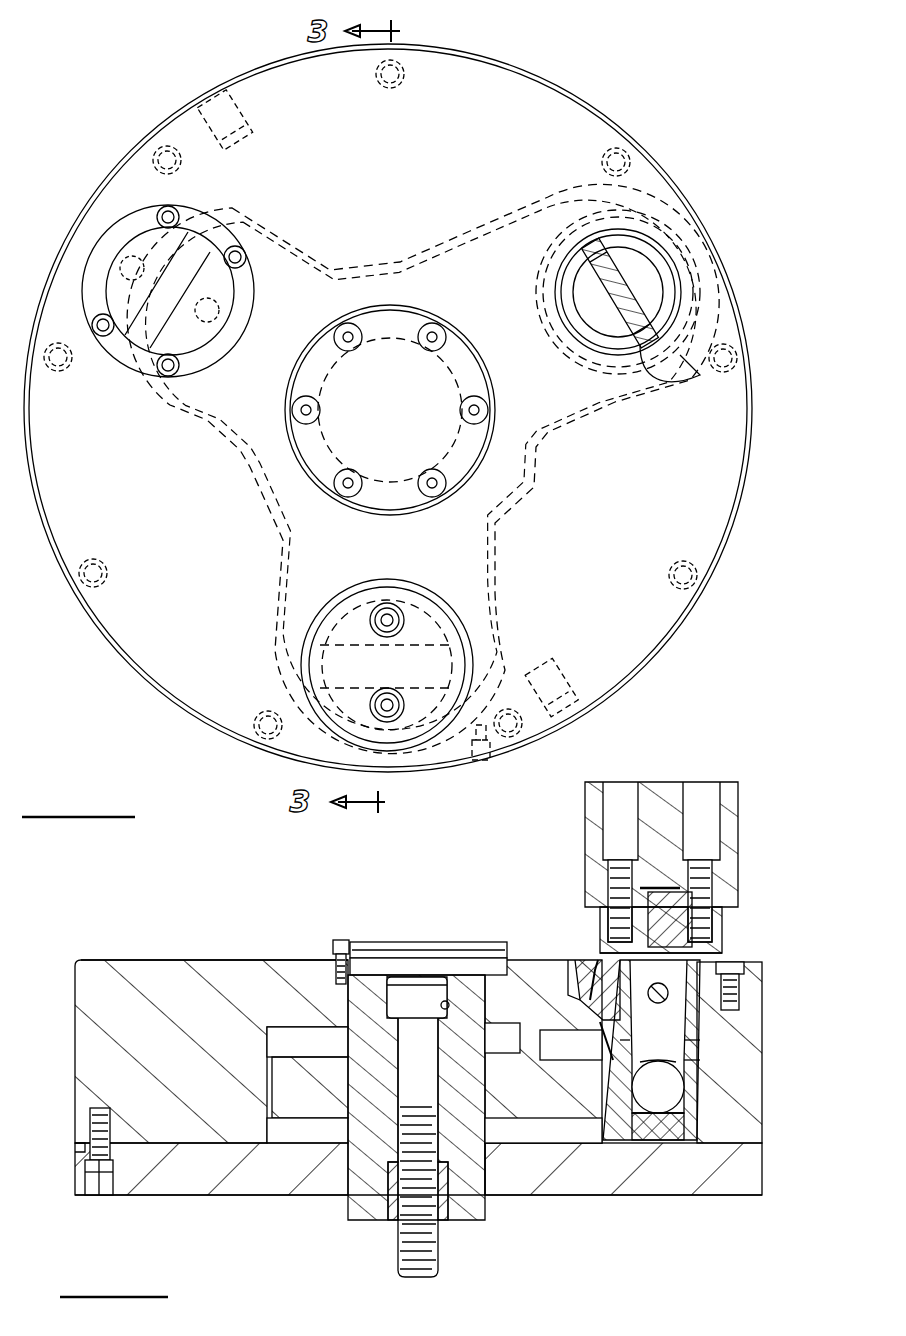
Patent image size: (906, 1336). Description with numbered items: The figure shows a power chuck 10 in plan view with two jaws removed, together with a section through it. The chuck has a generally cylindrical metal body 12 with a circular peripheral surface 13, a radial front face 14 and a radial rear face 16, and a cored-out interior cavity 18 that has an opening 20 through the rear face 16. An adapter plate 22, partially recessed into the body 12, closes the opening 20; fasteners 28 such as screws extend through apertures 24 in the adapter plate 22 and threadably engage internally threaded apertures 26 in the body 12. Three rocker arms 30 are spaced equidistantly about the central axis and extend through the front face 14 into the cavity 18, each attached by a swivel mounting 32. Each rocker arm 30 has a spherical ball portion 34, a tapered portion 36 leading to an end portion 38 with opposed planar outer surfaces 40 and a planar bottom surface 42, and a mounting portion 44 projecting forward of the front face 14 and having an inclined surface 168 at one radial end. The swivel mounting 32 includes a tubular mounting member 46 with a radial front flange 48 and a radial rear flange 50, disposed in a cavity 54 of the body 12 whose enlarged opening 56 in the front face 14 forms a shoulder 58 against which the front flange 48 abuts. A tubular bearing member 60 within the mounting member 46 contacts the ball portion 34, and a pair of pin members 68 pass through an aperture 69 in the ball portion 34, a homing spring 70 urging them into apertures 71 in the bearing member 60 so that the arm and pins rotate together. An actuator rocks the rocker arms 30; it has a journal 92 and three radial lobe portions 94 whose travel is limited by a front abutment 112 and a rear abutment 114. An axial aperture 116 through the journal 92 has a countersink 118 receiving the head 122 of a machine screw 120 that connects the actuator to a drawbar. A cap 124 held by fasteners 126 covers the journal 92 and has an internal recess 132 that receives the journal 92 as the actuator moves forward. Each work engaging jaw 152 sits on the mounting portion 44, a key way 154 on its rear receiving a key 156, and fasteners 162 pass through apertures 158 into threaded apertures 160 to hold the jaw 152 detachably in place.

In FIG. 2, the power chuck 10 is at (662, 140).
In FIG. 3, the power chuck 10 is at (88, 945).
In FIG. 2, the body 12 is at (732, 548).
In FIG. 3, the body 12 is at (95, 1040).
In FIG. 3, the circular peripheral surface 13 is at (73, 1100).
In FIG. 2, the radial front face 14 is at (612, 647).
In FIG. 3, the radial front face 14 is at (160, 958).
In FIG. 3, the radial rear face 16 is at (178, 1150).
In FIG. 3, the cavity 18 is at (262, 1033).
In FIG. 3, the opening 20 is at (305, 1128).
In FIG. 3, the adapter plate 22 is at (708, 1188).
In FIG. 3, the apertures 24 is at (90, 1158).
In FIG. 3, the internally threaded apertures 26 is at (90, 1138).
In FIG. 2, the fasteners 28 is at (692, 583).
In FIG. 3, the fasteners 28 is at (100, 1175).
In FIG. 3, the rocker arms 30 is at (750, 942).
In FIG. 3, the swivel mounting 32 is at (596, 968).
In FIG. 3, the ball portion 34 is at (688, 1000).
In FIG. 3, the tapered portion 36 is at (690, 1060).
In FIG. 3, the end portion 38 is at (688, 1097).
In FIG. 3, the planar outer surfaces 40 is at (665, 1100).
In FIG. 3, the planar bottom surface 42 is at (650, 1105).
In FIG. 3, the mounting portion 44 is at (705, 892).
In FIG. 3, the tubular mounting member 46 is at (680, 1045).
In FIG. 3, the radial front flange 48 is at (572, 985).
In FIG. 3, the radial rear flange 50 is at (608, 1040).
In FIG. 3, the cavity 54 is at (680, 1040).
In FIG. 3, the enlarged opening 56 is at (745, 968).
In FIG. 3, the shoulder 58 is at (745, 995).
In FIG. 2, the tubular bearing member 60 is at (655, 275).
In FIG. 3, the tubular bearing member 60 is at (588, 1018).
In FIG. 2, the pin members 68 is at (682, 375).
In FIG. 3, the pin members 68 is at (592, 900).
In FIG. 2, the aperture 69 is at (630, 302).
In FIG. 3, the aperture 69 is at (668, 985).
In FIG. 2, the homing spring 70 is at (672, 236).
In FIG. 2, the apertures 71 is at (640, 338).
In FIG. 3, the journal 92 is at (470, 1198).
In FIG. 3, the lobe portions 94 is at (565, 1150).
In FIG. 3, the front abutment 112 is at (500, 1048).
In FIG. 3, the rear abutment 114 is at (720, 1120).
In FIG. 3, the aperture 116 is at (340, 1040).
In FIG. 3, the countersink 118 is at (449, 1005).
In FIG. 3, the machine screw 120 is at (428, 1242).
In FIG. 3, the head 122 is at (410, 985).
In FIG. 2, the cap 124 is at (470, 452).
In FIG. 3, the cap 124 is at (360, 950).
In FIG. 2, the fasteners 126 is at (475, 398).
In FIG. 3, the fasteners 126 is at (338, 940).
In FIG. 3, the recess 132 is at (458, 945).
In FIG. 3, the work engaging jaw 152 is at (660, 800).
In FIG. 3, the key way 154 is at (700, 860).
In FIG. 2, the key 156 is at (180, 265).
In FIG. 3, the key 156 is at (705, 882).
In FIG. 3, the apertures 158 is at (700, 900).
In FIG. 2, the threaded apertures 160 is at (207, 310).
In FIG. 2, the fasteners 162 is at (385, 703).
In FIG. 3, the inclined surface 168 is at (725, 918).